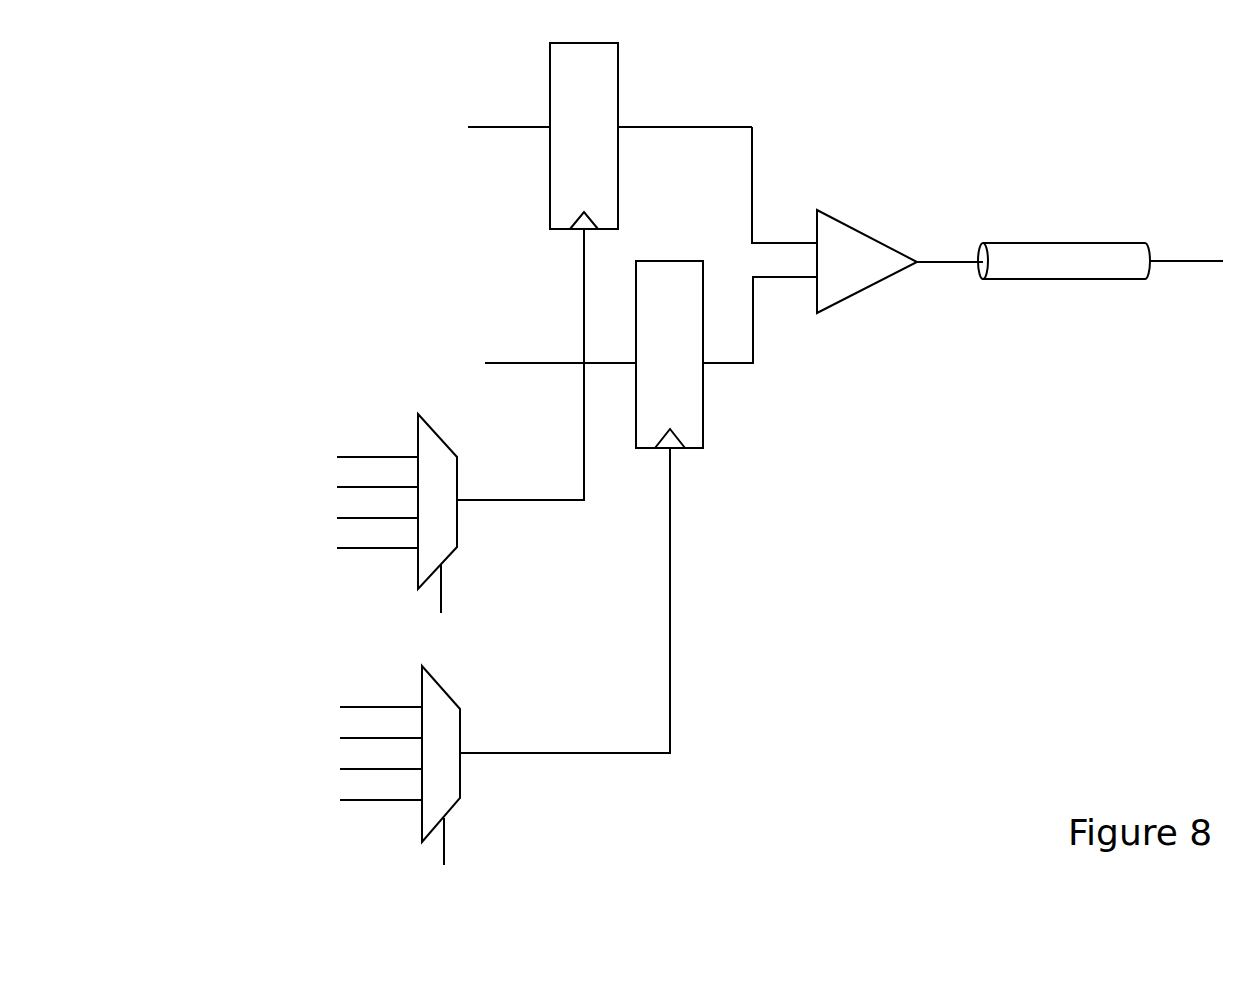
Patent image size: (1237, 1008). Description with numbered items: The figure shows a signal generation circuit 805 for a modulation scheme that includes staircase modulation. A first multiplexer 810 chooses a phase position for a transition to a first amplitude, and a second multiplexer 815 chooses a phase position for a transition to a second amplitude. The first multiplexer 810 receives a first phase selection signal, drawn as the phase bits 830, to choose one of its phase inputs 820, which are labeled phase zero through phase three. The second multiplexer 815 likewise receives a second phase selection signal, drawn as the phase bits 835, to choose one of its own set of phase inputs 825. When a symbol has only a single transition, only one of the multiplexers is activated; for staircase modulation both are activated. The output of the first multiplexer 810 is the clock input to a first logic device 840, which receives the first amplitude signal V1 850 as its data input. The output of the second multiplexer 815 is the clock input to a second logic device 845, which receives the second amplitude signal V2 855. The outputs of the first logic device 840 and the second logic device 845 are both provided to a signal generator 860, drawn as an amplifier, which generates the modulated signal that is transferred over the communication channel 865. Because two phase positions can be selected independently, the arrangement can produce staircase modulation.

The clock generation circuit 805 is at (242, 111).
The first multiplexer 810 is at (501, 409).
The second multiplexer 815 is at (546, 645).
The phase inputs 820 is at (340, 486).
The phase inputs of second multiplexer 825 is at (342, 737).
The phase bits of first multiplexer 830 is at (441, 604).
The phase bits of second multiplexer 835 is at (445, 857).
The first logic device 840 is at (683, 143).
The second flip-flop 845 is at (726, 354).
The first amplitude signal V1 850 is at (491, 130).
The second amplitude signal V2 855 is at (544, 368).
The signal generator 860 is at (900, 261).
The communication channel 865 is at (1100, 261).